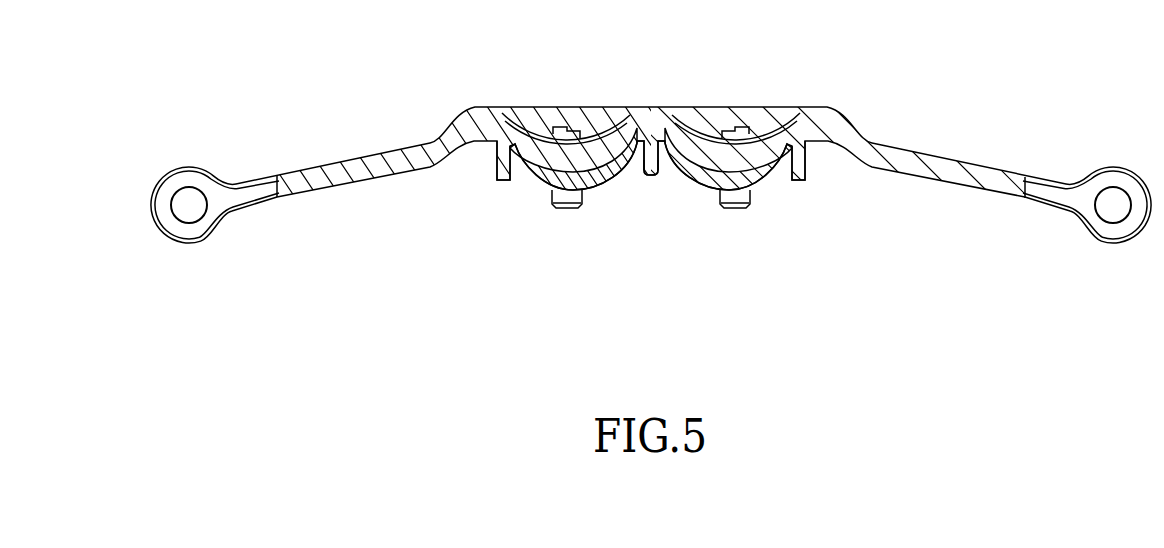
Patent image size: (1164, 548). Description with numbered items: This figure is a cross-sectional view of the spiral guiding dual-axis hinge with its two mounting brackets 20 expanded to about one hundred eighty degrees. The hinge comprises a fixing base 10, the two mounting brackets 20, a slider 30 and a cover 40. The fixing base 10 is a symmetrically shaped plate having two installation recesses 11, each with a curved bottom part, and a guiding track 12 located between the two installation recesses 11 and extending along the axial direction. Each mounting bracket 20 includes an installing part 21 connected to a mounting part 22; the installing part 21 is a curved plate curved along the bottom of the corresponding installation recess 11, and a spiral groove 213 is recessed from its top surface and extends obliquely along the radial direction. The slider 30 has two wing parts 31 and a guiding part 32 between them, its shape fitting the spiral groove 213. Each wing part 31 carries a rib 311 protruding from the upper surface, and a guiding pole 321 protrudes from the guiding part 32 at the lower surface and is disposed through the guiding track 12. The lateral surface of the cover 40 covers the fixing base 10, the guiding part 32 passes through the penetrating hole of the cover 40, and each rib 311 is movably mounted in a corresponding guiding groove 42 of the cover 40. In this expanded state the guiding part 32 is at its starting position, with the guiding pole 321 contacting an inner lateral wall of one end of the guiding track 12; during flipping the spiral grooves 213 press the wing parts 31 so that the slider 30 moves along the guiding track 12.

The fixing base 10 is at (838, 214).
The installation recess 11 is at (517, 178).
The guiding track 12 is at (670, 176).
The mounting bracket 20 is at (893, 116).
The installing part 21 is at (748, 155).
The spiral groove 213 is at (545, 120).
The mounting part 22 is at (1068, 177).
The slider 30 is at (573, 88).
The wing part 31 is at (582, 160).
The rib 311 is at (547, 172).
The guiding part 32 is at (657, 112).
The guiding pole 321 is at (651, 176).
The cover 40 is at (757, 108).
The guiding groove 42 is at (560, 128).